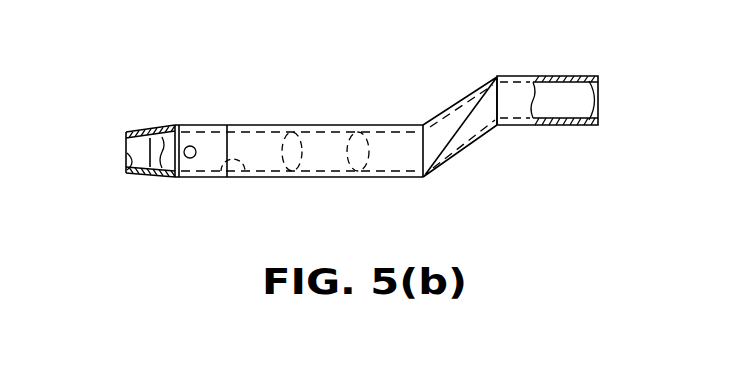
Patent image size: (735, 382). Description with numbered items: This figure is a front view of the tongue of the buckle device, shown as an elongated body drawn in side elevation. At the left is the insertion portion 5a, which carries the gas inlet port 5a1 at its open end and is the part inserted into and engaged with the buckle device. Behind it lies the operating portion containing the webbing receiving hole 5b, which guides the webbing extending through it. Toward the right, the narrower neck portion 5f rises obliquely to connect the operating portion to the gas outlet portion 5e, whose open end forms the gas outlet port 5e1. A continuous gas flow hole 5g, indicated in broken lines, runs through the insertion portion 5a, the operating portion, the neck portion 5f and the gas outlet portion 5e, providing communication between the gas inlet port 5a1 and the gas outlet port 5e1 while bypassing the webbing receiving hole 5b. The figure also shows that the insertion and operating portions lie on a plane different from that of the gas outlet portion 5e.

The insertion portion 5a is at (168, 132).
The gas inlet port 5a1 is at (128, 156).
The webbing receiving hole 5b is at (340, 127).
The gas flow hole 5g is at (245, 172).
The neck portion 5f is at (453, 101).
The gas outlet portion 5e is at (560, 76).
The gas outlet port 5e1 is at (598, 98).